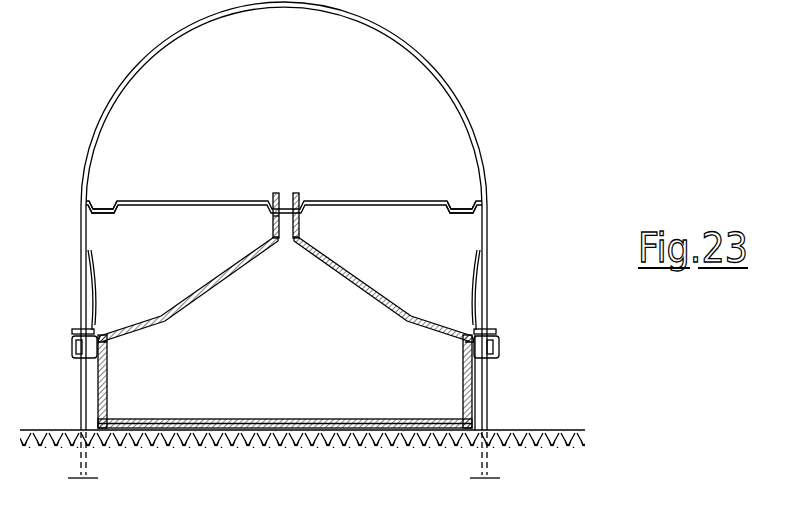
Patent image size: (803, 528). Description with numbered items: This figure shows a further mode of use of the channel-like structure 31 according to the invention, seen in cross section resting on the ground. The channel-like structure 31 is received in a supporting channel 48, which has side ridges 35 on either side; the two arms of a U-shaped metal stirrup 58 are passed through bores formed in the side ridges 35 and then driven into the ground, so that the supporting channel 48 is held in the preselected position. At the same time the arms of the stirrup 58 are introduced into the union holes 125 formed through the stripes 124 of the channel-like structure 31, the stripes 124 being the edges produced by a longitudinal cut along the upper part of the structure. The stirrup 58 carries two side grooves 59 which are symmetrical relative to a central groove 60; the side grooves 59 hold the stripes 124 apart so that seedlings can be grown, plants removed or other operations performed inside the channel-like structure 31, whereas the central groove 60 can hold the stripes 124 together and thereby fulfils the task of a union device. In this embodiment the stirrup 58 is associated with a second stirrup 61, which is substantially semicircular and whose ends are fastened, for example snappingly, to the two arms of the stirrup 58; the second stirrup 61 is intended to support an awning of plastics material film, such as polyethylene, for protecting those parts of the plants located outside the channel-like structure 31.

The second stirrup 61 is at (468, 108).
The U-shaped metal stirrup 58 is at (374, 199).
The side grooves 59 is at (104, 207).
The stripes 124 is at (270, 195).
The central groove 60 is at (285, 200).
The union holes 125 is at (268, 220).
The channel-like structure 31 is at (394, 299).
The supporting channel 48 is at (483, 392).
The side ridges 35 is at (70, 346).